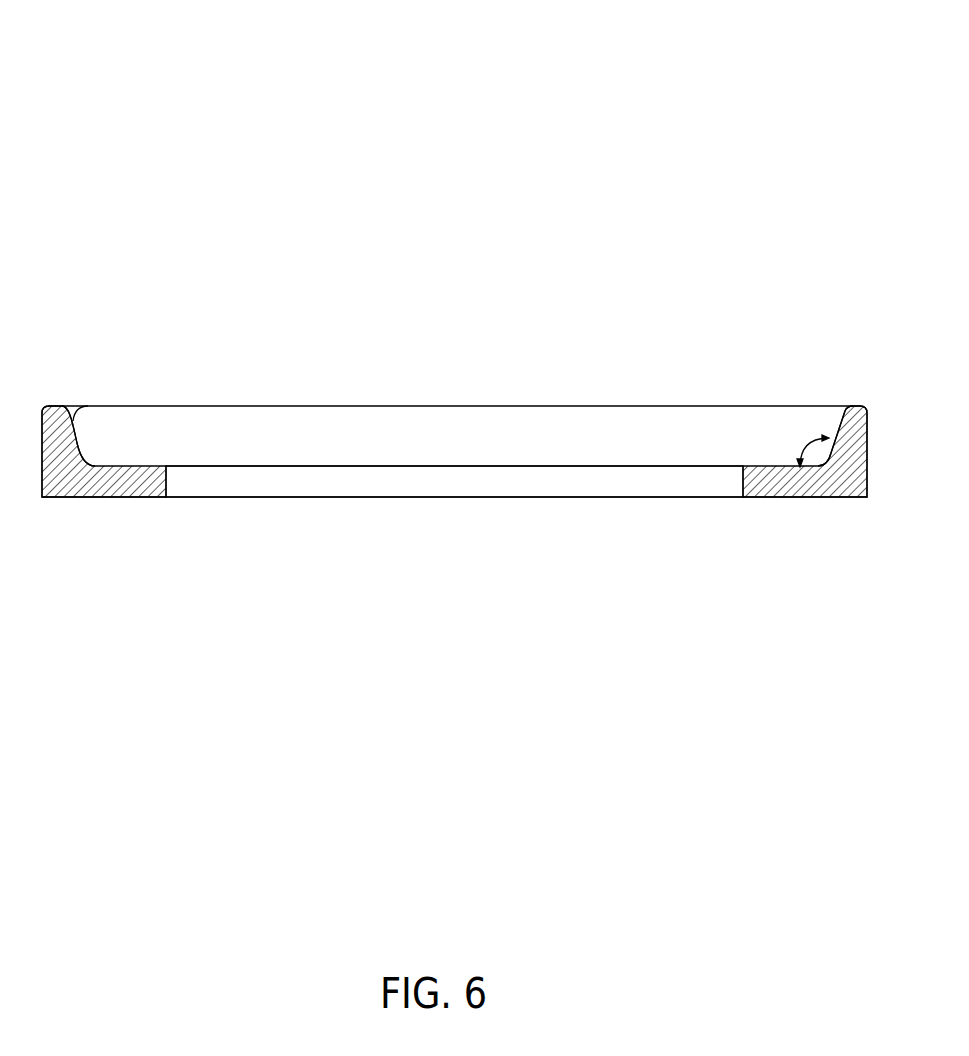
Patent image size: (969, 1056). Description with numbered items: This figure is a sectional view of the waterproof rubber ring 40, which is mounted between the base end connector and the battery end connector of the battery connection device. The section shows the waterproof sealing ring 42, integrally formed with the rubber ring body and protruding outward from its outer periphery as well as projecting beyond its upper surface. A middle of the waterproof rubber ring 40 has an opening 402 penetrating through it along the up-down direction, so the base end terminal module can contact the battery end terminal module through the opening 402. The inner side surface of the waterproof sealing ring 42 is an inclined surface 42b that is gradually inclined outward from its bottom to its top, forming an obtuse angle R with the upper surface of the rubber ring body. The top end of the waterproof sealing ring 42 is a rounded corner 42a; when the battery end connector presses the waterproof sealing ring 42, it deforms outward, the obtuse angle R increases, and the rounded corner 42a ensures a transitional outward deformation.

The waterproof rubber ring 40 is at (83, 53).
The waterproof sealing ring 42 is at (530, 370).
The rounded corner 42a is at (852, 406).
The inclined surface 42b is at (95, 407).
The opening 402 is at (447, 485).
The obtuse angle R is at (810, 439).